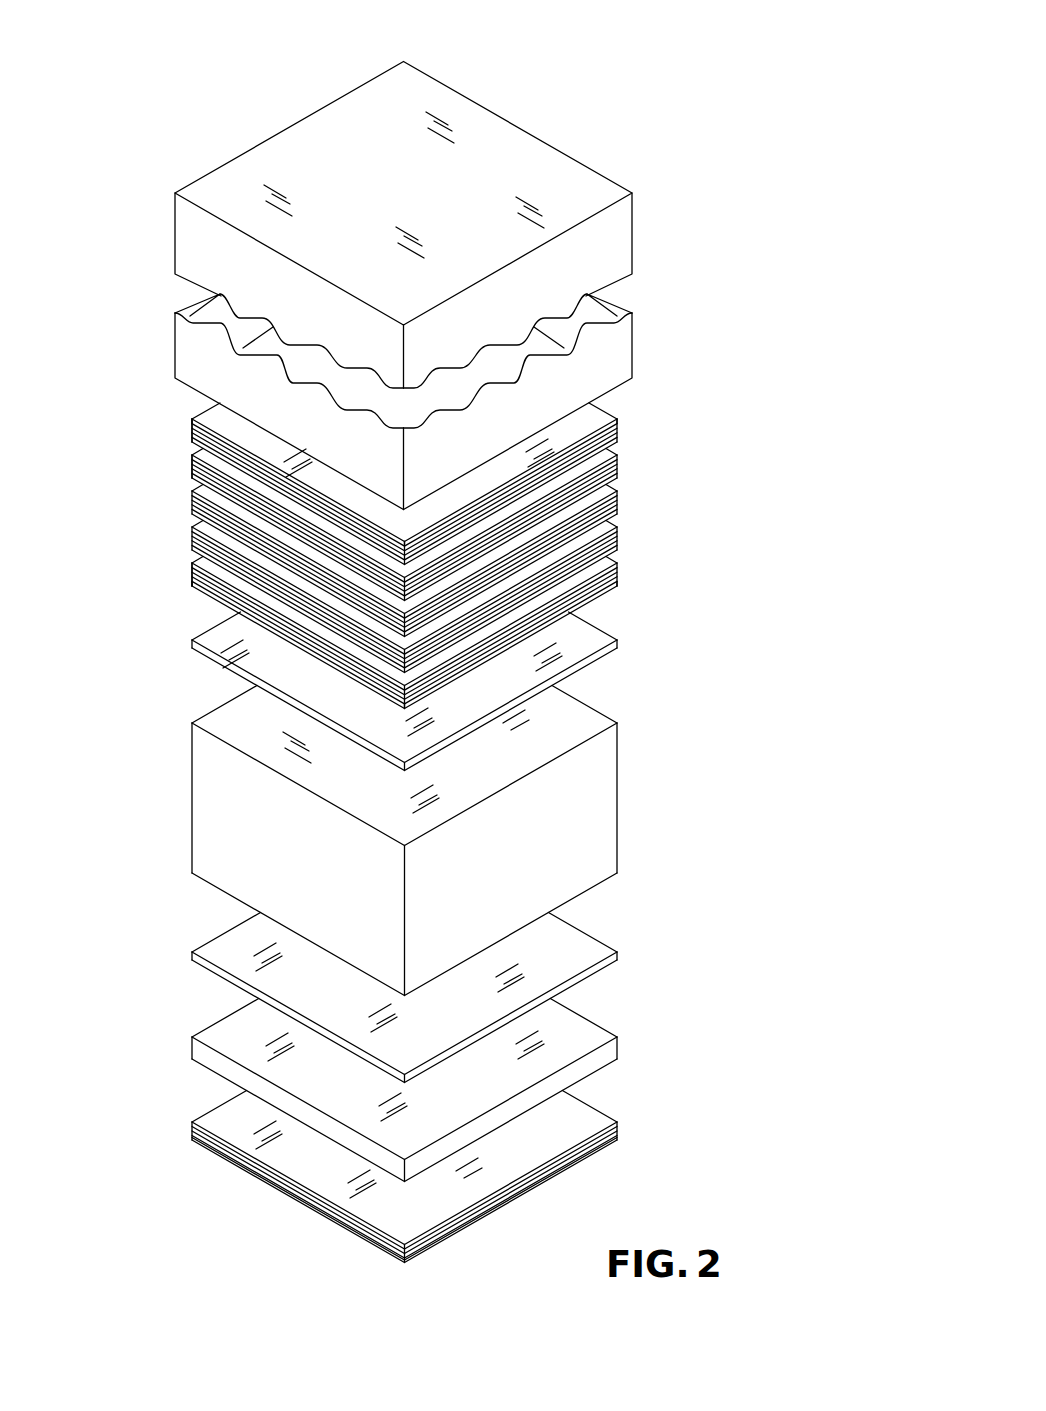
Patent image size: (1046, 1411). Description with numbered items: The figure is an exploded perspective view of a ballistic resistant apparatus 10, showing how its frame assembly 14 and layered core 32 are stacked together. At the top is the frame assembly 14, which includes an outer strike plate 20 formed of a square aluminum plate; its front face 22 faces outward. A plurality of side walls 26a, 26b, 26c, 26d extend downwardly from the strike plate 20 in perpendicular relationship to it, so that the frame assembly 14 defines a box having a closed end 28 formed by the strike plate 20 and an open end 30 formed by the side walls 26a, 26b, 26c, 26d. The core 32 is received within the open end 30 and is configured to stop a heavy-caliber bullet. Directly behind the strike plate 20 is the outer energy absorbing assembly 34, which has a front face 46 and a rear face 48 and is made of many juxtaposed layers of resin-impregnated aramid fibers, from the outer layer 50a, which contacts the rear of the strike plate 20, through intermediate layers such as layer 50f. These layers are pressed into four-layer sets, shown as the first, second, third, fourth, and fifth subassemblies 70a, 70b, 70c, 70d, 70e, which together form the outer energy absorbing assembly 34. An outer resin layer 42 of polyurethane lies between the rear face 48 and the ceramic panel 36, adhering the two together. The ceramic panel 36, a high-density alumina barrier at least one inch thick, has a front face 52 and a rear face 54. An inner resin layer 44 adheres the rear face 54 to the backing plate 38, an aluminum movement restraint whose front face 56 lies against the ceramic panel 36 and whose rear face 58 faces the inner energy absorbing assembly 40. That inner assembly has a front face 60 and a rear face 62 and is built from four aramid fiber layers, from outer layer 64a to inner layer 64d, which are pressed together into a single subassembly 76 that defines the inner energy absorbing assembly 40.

The thermal interface assembly 10 is at (650, 95).
The frame assembly 14 is at (522, 125).
The outer strike plate 20 is at (362, 120).
The front face 22 is at (415, 201).
The side wall 26a is at (618, 235).
The side wall 26b is at (190, 232).
The side wall 26c is at (190, 302).
The side wall 26d is at (633, 260).
The closed end 28 is at (232, 118).
The open end 30 is at (188, 397).
The core 32 is at (158, 438).
The outer energy absorbing assembly 34 is at (743, 483).
The ceramic panel 36 is at (618, 800).
The backing plate 38 is at (618, 1048).
The inner energy absorbing assembly 40 is at (222, 1160).
The outer resin layer 42 is at (610, 627).
The inner resin layer 44 is at (618, 955).
The front face 46 is at (262, 432).
The rear face 48 is at (205, 596).
The outer layer 50a is at (603, 402).
The intermediate layer 50f is at (617, 590).
The front face 52 is at (556, 717).
The rear face 54 is at (600, 885).
The front face 56 is at (574, 1013).
The rear face 58 is at (598, 1070).
The front face 60 is at (600, 1115).
The rear face 62 is at (540, 1195).
The outer layer 64a is at (277, 1178).
The inner layer 64d is at (318, 1213).
The first subassembly 70a is at (617, 425).
The second subassembly 70b is at (617, 461).
The third subassembly 70c is at (617, 497).
The fourth subassembly 70d is at (617, 533).
The fifth subassembly 70e is at (617, 569).
The subassembly 76 is at (618, 1128).